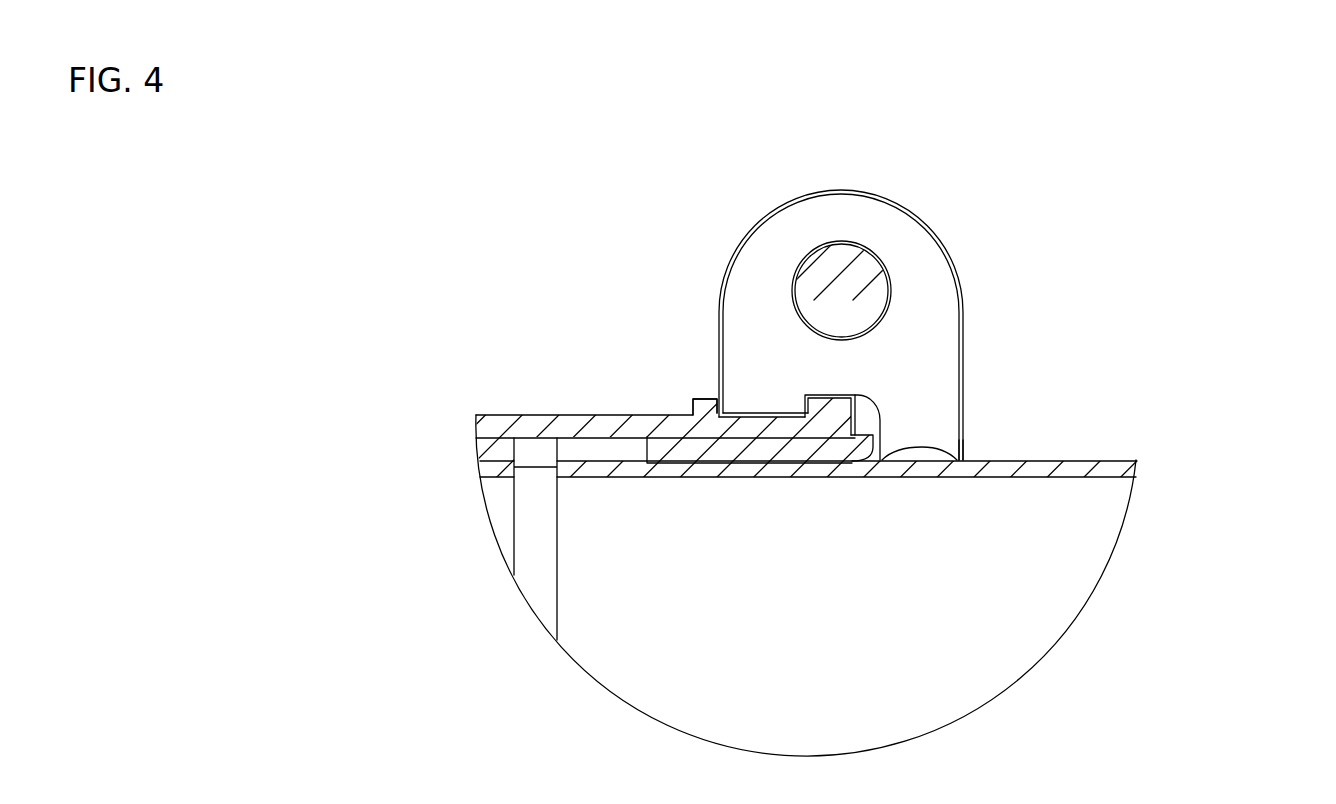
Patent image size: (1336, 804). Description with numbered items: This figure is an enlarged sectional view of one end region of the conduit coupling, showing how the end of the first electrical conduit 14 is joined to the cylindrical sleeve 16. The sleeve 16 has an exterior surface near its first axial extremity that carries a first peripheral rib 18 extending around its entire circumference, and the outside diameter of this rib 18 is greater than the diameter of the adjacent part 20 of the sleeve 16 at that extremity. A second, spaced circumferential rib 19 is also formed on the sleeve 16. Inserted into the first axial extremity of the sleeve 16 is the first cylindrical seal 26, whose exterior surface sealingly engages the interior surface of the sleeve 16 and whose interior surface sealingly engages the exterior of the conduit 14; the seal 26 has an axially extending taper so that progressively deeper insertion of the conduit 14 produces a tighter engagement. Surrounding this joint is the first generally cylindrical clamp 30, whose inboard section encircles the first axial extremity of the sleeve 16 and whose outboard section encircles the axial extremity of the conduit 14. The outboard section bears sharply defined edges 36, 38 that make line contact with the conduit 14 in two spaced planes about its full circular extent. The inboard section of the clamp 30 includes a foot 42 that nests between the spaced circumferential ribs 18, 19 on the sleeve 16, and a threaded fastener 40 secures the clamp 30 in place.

The first electrical conduit 14 is at (1083, 458).
The cylindrical sleeve 16 is at (530, 413).
The first peripheral rib 18 is at (837, 395).
The circumferential rib 19 is at (760, 413).
The part of the cylindrical sleeve proximate to the first axial extremity 20 is at (742, 417).
The first cylindrical seal 26 is at (718, 467).
The first generally cylindrical clamp 30 is at (897, 204).
The edge 36 is at (962, 460).
The edge 38 is at (882, 460).
The threaded fastener 40 is at (890, 273).
The foot 42 is at (720, 400).